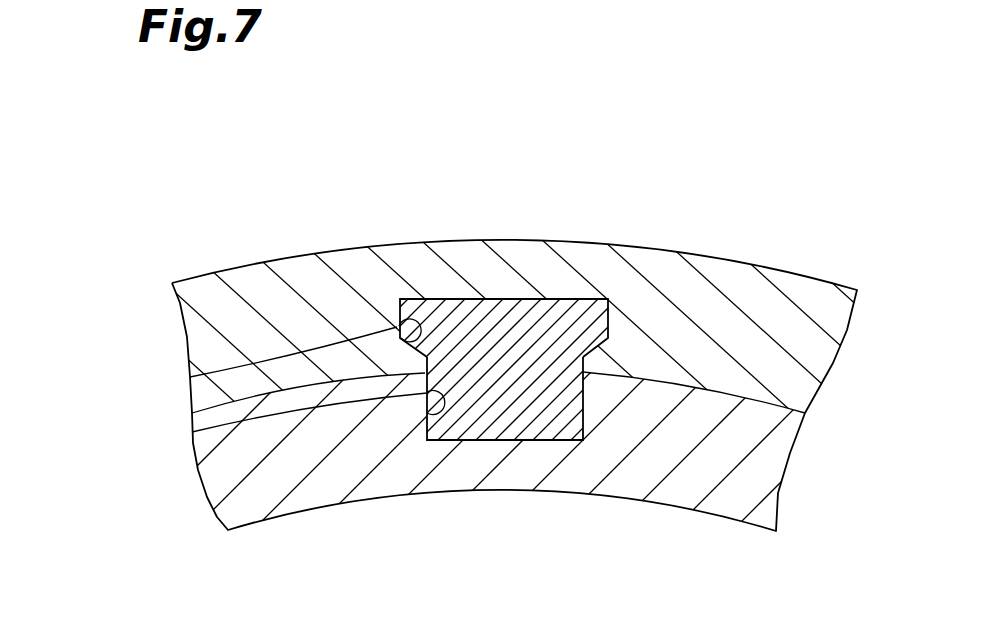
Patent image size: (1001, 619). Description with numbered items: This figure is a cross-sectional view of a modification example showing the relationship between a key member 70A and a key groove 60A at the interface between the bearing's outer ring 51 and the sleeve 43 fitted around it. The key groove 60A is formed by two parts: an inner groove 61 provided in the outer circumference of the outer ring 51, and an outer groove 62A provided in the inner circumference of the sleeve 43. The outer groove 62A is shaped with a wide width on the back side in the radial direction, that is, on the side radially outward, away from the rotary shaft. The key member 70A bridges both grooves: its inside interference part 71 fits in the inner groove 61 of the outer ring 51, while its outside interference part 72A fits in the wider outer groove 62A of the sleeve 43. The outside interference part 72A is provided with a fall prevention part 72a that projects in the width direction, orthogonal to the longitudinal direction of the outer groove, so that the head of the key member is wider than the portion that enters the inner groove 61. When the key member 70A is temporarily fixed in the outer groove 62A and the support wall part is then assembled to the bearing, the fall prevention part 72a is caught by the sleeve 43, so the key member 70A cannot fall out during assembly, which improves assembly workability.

The sleeve 43 is at (245, 278).
The outer ring 51 is at (323, 492).
The key groove 60A is at (92, 365).
The inner groove 61 is at (193, 432).
The outer groove 62A is at (191, 376).
The key member 70A is at (785, 132).
The inside interference part 71 is at (585, 415).
The outside interference part 72A is at (608, 327).
The fall prevention part 72a is at (587, 310).